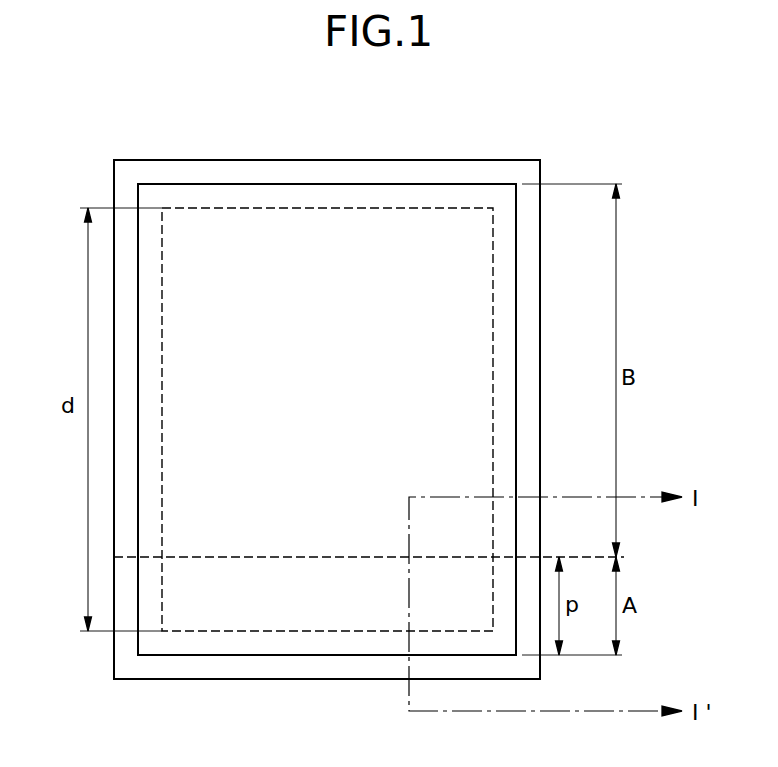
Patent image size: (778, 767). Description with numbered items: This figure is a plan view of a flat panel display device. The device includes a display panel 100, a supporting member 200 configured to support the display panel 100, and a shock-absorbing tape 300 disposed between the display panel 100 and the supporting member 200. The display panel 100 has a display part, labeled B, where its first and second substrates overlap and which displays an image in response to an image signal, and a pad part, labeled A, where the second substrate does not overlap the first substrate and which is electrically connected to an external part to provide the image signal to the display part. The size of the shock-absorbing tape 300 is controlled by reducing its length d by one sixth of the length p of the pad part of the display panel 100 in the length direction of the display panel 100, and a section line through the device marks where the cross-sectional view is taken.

The display panel 100 is at (457, 183).
The supporting member 200 is at (378, 160).
The shock-absorbing tape 300 is at (291, 172).